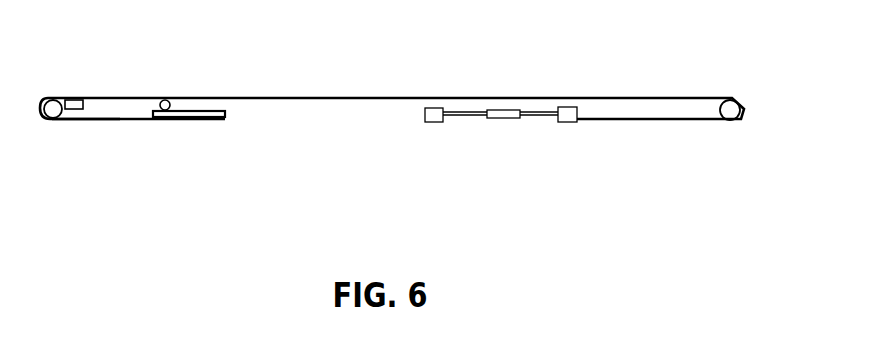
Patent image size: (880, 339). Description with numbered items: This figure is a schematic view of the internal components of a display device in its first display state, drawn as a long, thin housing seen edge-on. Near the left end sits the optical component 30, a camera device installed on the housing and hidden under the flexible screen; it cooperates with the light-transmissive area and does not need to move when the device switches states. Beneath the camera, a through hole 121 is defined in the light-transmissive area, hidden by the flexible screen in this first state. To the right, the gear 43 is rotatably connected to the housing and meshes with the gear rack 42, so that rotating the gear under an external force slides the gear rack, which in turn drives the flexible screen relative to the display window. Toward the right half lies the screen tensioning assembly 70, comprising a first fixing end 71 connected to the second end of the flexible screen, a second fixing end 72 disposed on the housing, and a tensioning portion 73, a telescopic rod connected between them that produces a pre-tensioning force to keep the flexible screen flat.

The optical component 30 is at (79, 100).
The gear 43 is at (167, 100).
The gear rack 42 is at (168, 110).
The through hole 121 is at (72, 120).
The screen tensioning assembly 70 is at (504, 173).
The first fixing end 71 is at (568, 143).
The second fixing end 72 is at (435, 110).
The tensioning portion 73 is at (500, 112).